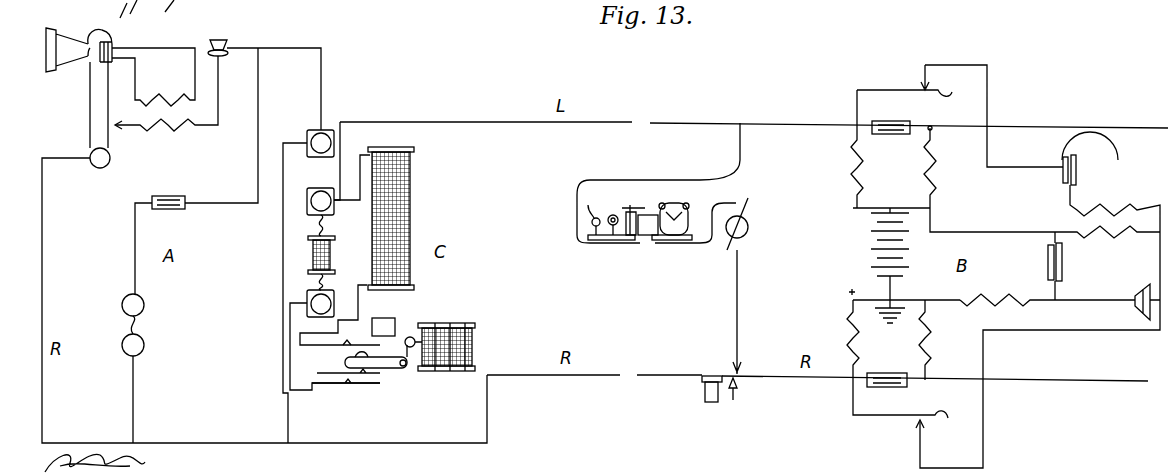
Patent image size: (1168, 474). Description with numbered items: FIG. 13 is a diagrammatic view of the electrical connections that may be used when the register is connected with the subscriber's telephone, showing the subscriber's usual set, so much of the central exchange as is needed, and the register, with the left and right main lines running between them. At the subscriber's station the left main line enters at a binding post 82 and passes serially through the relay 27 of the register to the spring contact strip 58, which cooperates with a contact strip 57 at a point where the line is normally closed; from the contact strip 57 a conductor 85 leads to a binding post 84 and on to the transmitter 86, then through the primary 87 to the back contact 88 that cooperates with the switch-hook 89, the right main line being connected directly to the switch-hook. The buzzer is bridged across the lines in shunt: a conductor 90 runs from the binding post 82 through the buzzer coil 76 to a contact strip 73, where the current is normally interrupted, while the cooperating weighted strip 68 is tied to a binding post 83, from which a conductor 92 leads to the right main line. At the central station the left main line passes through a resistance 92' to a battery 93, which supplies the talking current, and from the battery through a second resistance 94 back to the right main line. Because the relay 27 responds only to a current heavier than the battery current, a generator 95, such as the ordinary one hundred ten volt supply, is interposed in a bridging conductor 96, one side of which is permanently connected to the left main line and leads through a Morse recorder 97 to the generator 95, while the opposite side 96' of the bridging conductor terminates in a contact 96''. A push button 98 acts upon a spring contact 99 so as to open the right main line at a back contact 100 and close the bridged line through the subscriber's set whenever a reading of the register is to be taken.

The relay 27 is at (416, 219).
The contact strip 57 is at (345, 385).
The spring contact strip 58 is at (369, 360).
The weighted strip 68 is at (362, 338).
The contact strip 73 is at (326, 345).
The buzzer coil 76 is at (314, 255).
The binding post 82 is at (319, 192).
The binding post 83 is at (334, 301).
The binding post 84 is at (311, 133).
The conductor 85 is at (283, 296).
The transmitter 86 is at (218, 37).
The primary 87 is at (166, 105).
The back contact 88 is at (111, 158).
The switch-hook 89 is at (94, 112).
The conductor 90 is at (315, 284).
The conductor 92 is at (316, 346).
The resistance 92' is at (839, 149).
The battery 93 is at (872, 254).
The second resistance 94 is at (847, 338).
The generator 95 is at (757, 226).
The bridging conductor 96 is at (682, 183).
The opposite side of bridging conductor 96' is at (762, 311).
The contact 96'' is at (765, 360).
The Morse recorder 97 is at (646, 246).
The push button 98 is at (705, 399).
The spring contact 99 is at (720, 374).
The back contact 100 is at (750, 396).